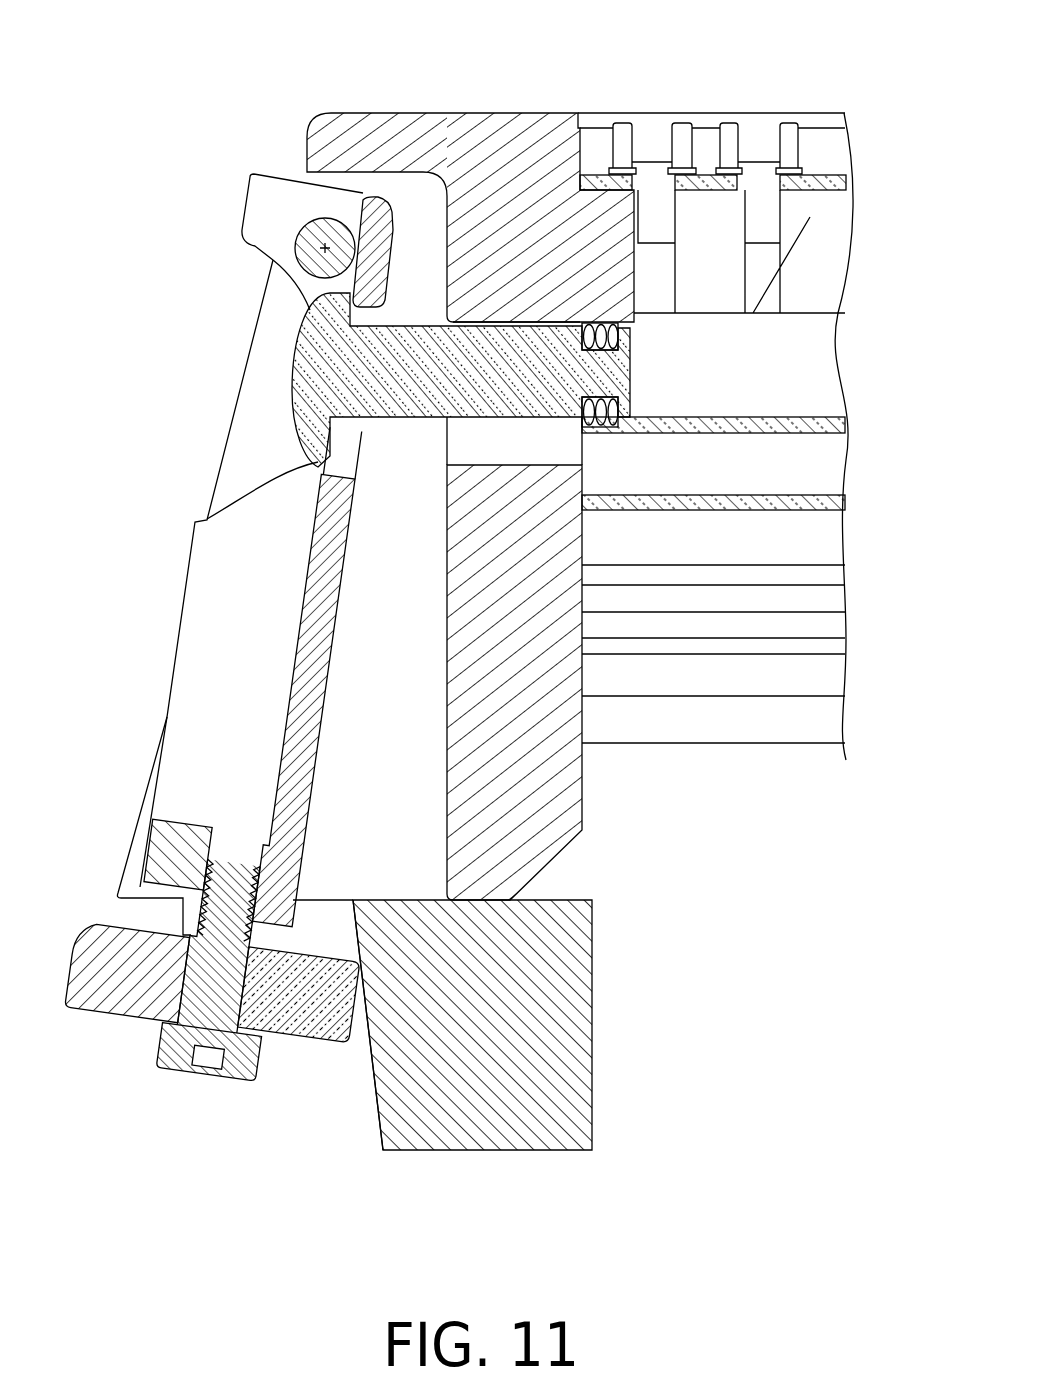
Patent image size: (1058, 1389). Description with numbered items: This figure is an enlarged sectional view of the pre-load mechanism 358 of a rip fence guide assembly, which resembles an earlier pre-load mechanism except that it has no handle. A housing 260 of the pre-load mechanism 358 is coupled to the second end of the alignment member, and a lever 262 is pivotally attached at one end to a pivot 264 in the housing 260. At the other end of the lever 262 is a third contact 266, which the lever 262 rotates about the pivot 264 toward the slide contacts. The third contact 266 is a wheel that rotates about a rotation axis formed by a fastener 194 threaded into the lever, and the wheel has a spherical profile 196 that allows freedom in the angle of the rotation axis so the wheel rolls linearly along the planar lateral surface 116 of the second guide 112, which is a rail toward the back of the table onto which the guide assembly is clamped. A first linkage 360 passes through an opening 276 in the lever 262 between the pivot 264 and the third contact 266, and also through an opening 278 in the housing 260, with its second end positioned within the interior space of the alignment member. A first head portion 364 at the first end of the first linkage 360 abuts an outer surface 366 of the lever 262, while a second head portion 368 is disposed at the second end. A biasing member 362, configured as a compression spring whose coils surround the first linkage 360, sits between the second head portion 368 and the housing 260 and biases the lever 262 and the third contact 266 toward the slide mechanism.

The pre-load mechanism 358 is at (198, 55).
The housing 260 is at (488, 105).
The first linkage 360 is at (493, 326).
The biasing member 362 is at (604, 322).
The first head portion 364 is at (291, 433).
The outer surface 366 is at (320, 525).
The lever 262 is at (181, 592).
The pivot 264 is at (320, 246).
The opening 276 is at (353, 450).
The second head portion 368 is at (634, 345).
The opening 278 is at (553, 465).
The third contact 266 is at (105, 1018).
The fastener 194 is at (240, 1076).
The spherical profile 196 is at (358, 1040).
The lateral surface 116 is at (376, 1126).
The second guide 112 is at (553, 1152).